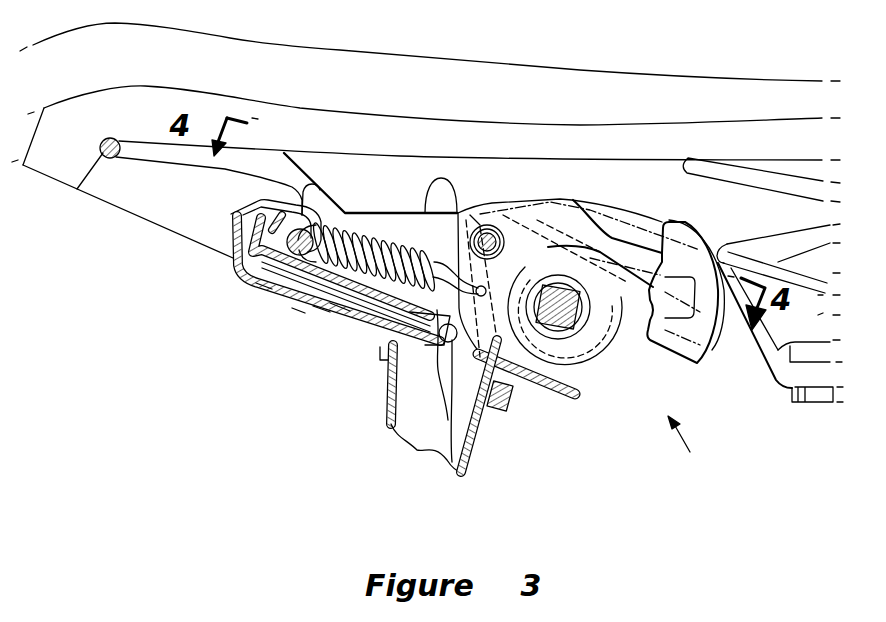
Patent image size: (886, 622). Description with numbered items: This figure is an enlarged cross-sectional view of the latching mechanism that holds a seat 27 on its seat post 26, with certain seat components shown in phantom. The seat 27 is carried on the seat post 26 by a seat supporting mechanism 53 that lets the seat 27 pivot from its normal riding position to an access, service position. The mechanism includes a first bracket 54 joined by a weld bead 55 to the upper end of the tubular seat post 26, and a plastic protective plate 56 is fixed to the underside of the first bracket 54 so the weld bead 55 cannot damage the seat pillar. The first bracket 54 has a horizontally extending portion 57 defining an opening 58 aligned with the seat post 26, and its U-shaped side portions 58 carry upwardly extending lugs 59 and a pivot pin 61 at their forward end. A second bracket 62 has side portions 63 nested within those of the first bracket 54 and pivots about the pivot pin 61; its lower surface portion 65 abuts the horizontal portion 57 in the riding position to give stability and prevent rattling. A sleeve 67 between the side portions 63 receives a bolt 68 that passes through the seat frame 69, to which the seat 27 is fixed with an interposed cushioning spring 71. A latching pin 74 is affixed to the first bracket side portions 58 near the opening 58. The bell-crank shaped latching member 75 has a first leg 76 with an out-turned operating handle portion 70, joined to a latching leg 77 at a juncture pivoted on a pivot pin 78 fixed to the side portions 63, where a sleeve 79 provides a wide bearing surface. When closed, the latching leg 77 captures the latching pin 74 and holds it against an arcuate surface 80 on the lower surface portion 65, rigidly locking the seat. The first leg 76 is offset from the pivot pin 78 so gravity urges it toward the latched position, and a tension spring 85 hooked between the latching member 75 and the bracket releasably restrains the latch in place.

The seat post 26 is at (484, 438).
The seat 27 is at (745, 88).
The seat supporting mechanism 53 is at (691, 447).
The first bracket 54 is at (262, 288).
The weld bead 55 is at (508, 398).
The plastic protective plate 56 is at (292, 310).
The horizontally extending portion 57 is at (331, 306).
The side portions 58 is at (452, 466).
The upwardly extending lugs 59 is at (417, 225).
The pivot pin 61 is at (293, 208).
The second bracket 62 is at (247, 278).
The side portions 63 is at (431, 224).
The lower surface portion 65 is at (313, 311).
The sleeve 67 is at (578, 388).
The bolt 68 is at (593, 322).
The seat frame 69 is at (140, 150).
The operating handle portion 70 is at (695, 350).
The spring 71 is at (807, 183).
The latching pin 74 is at (436, 446).
The latching member 75 is at (641, 222).
The first leg 76 is at (567, 224).
The latching leg 77 is at (396, 427).
The pivot pin 78 is at (521, 217).
The sleeve 79 is at (495, 224).
The arcuate surface 80 is at (323, 195).
The tension spring 85 is at (388, 232).